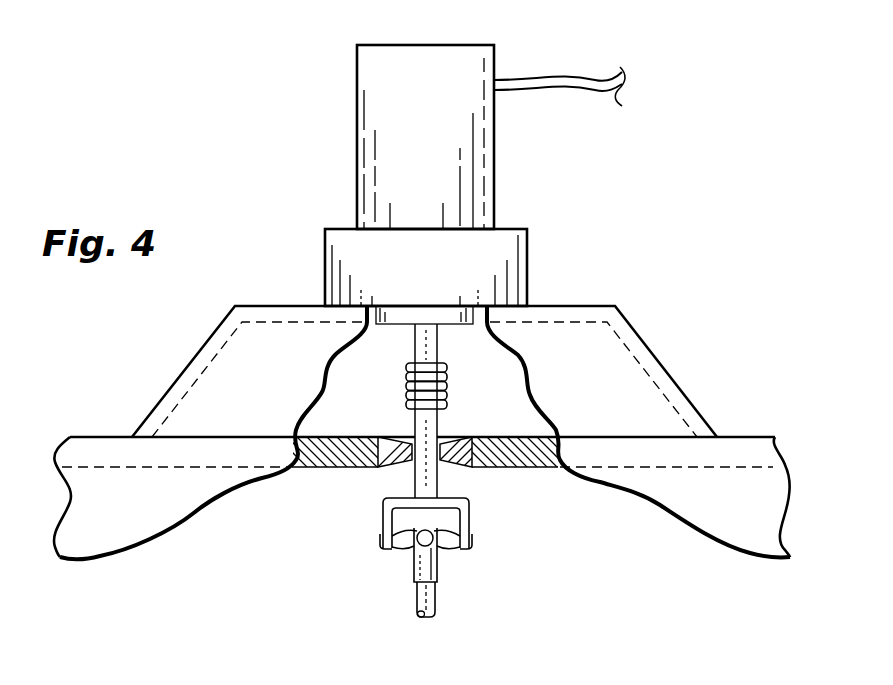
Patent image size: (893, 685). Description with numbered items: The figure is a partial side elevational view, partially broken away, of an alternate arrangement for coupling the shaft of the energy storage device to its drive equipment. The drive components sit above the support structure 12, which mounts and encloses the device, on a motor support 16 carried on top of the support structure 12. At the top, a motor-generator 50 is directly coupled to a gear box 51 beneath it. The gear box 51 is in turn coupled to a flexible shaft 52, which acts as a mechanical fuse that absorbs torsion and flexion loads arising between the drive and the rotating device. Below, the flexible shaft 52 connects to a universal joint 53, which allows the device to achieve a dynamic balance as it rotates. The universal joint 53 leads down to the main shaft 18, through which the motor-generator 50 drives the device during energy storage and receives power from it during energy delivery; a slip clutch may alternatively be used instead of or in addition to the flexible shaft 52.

The support structure 12 is at (743, 437).
The motor support 16 is at (198, 356).
The main shaft 18 is at (436, 607).
The motor-generator 50 is at (357, 105).
The gear box 51 is at (325, 248).
The flexible shaft 52 is at (447, 395).
The universal joint 53 is at (470, 540).